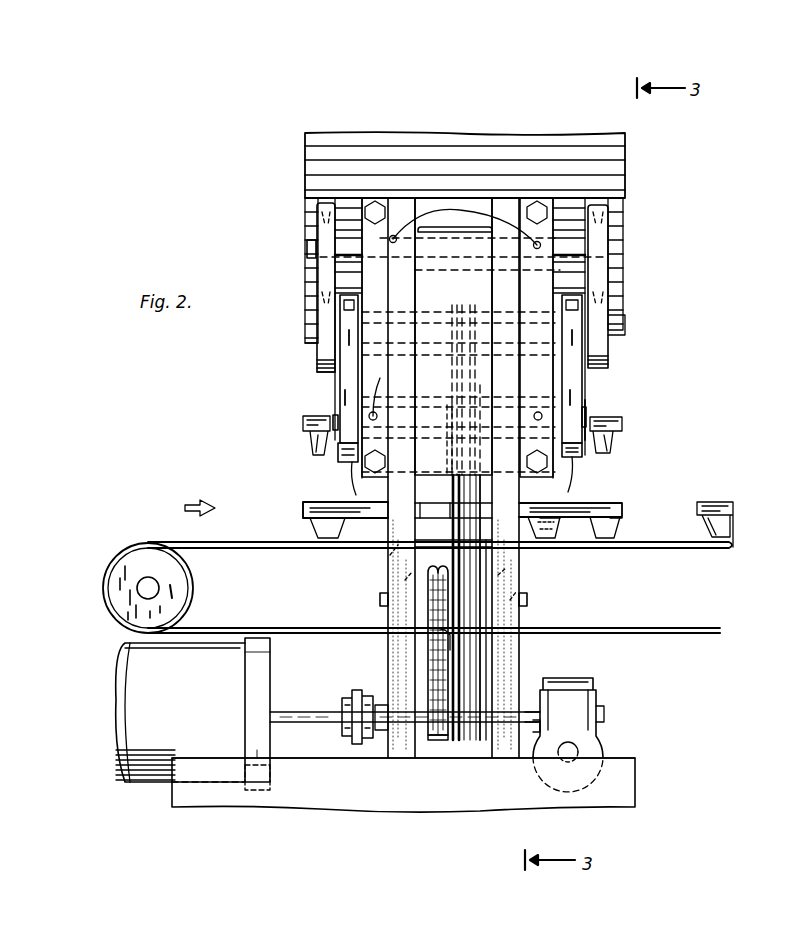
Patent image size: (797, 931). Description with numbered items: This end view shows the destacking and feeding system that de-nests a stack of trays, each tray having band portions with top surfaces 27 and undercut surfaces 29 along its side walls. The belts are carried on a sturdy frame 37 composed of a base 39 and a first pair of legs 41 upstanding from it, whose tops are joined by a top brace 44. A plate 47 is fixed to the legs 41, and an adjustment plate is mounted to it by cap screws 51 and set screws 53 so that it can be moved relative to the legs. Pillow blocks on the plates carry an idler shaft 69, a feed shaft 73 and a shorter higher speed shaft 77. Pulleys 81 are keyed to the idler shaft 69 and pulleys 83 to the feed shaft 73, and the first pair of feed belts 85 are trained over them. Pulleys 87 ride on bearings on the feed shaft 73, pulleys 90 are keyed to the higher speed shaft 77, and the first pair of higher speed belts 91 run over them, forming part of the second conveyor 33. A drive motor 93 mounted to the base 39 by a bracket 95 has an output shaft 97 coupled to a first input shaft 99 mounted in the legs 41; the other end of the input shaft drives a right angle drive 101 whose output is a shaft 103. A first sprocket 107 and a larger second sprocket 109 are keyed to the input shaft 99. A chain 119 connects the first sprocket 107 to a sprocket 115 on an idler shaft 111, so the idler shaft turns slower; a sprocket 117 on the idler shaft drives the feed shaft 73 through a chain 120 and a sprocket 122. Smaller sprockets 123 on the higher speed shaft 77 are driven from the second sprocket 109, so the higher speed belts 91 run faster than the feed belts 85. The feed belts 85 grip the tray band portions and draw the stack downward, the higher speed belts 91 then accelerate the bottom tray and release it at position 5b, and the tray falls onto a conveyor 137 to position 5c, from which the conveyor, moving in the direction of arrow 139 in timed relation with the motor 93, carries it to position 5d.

The top brace 44 is at (470, 196).
The cap screws 51 is at (540, 202).
The first pair of feed belts 85 is at (308, 202).
The pulleys 81 is at (318, 226).
The idler shaft 69 is at (610, 246).
The pulleys 83 is at (317, 370).
The feed shaft 73 is at (620, 330).
The pulleys 87 is at (360, 295).
The plate 47 is at (490, 283).
The set screws 53 is at (455, 215).
The sprockets 122 is at (465, 320).
The chains 120 is at (452, 380).
The sprockets 123 is at (478, 398).
The higher speed shaft 77 is at (320, 416).
The tray position 5b is at (622, 417).
The second conveyor 33 is at (598, 394).
The pulleys 90 is at (336, 460).
The first pair of higher speed belts 91 is at (350, 478).
The top surfaces 27 is at (600, 515).
The undercut surfaces 29 is at (303, 516).
The tray position 5c is at (300, 500).
The tray position 5d is at (732, 498).
The first pair of legs 41 is at (395, 558).
The idler shaft 111 is at (380, 597).
The sprocket 117 is at (475, 600).
The arrow 139 is at (165, 589).
The conveyor 137 is at (690, 630).
The drive motor 93 is at (130, 711).
The bracket 95 is at (270, 666).
The motor output shaft 97 is at (305, 712).
The chain 119 is at (430, 682).
The sprocket 115 is at (428, 632).
The first sprocket 107 is at (432, 737).
The second sprocket 109 is at (468, 740).
The first input shaft 99 is at (486, 735).
The right angle drive 101 is at (598, 714).
The shaft 103 is at (576, 752).
The base 39 is at (625, 768).
The frame 37 is at (640, 792).